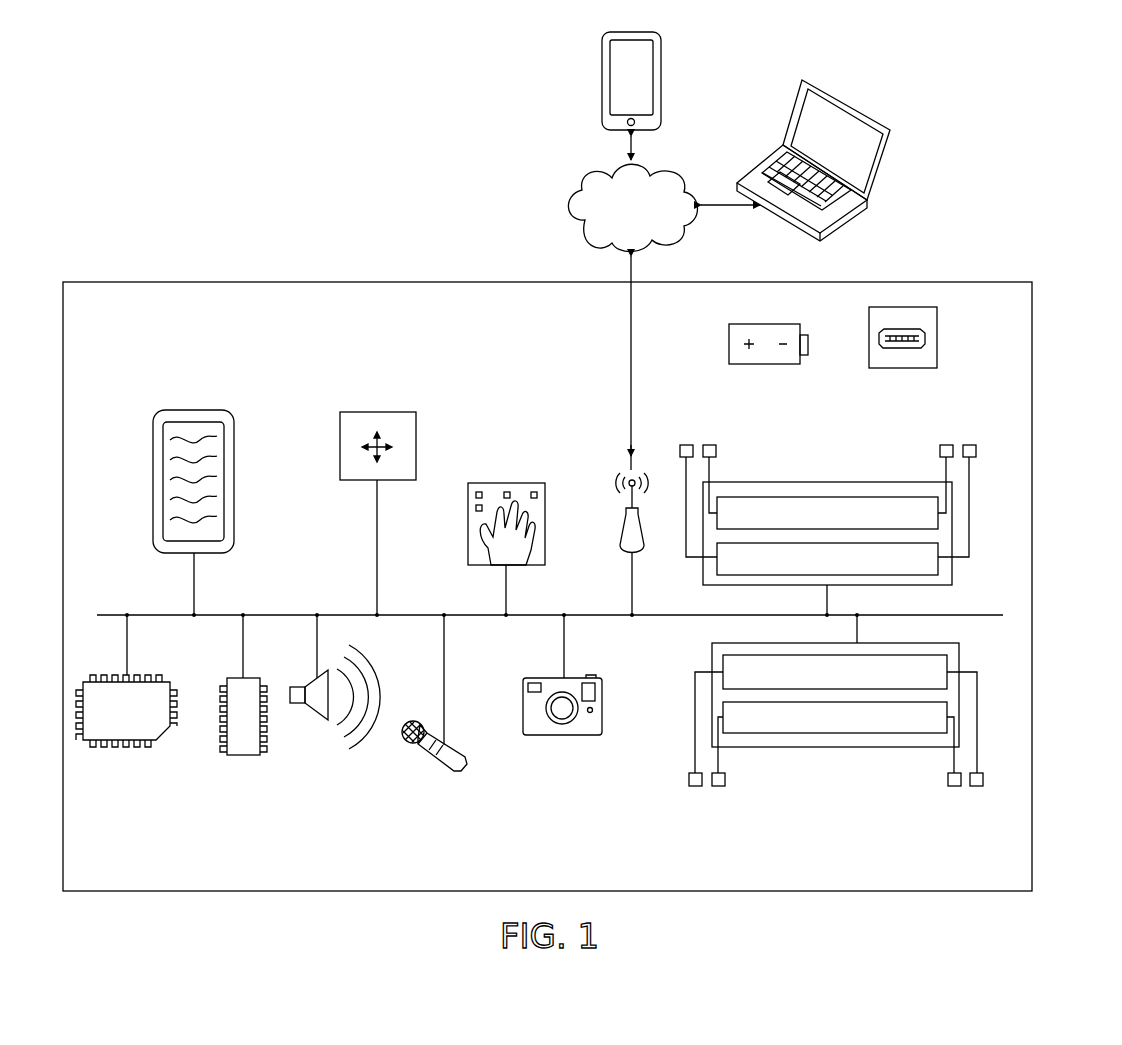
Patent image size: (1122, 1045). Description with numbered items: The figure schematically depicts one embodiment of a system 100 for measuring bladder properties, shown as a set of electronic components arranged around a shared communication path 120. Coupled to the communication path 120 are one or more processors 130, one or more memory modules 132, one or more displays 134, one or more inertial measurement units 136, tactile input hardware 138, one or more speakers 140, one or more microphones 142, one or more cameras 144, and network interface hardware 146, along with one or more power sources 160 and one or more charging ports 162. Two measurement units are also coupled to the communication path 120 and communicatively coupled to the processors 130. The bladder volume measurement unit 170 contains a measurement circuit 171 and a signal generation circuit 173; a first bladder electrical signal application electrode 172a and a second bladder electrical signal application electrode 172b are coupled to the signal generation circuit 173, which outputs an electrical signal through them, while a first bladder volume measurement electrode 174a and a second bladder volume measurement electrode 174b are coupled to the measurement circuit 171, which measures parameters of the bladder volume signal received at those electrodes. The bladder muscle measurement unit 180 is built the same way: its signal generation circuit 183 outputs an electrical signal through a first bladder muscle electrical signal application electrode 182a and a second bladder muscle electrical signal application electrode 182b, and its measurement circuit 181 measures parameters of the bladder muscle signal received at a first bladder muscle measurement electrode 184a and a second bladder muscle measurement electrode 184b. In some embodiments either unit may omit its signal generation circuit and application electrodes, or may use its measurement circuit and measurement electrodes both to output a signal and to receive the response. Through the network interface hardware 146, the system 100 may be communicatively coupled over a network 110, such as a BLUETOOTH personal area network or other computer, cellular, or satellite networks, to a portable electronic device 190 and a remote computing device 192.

The system 100 is at (1034, 281).
The network 110 is at (569, 208).
The communication path 120 is at (110, 614).
The processors 130 is at (164, 742).
The memory modules 132 is at (243, 756).
The displays 134 is at (193, 410).
The inertial measurement units 136 is at (377, 412).
The tactile input hardware 138 is at (506, 483).
The speakers 140 is at (313, 722).
The microphones 142 is at (433, 763).
The cameras 144 is at (562, 736).
The network interface hardware 146 is at (624, 518).
The power sources 160 is at (729, 341).
The charging ports 162 is at (937, 337).
The bladder volume measurement unit 170 is at (830, 499).
The measurement circuit 171 is at (853, 497).
The first bladder electrical signal application electrode 172a is at (686, 445).
The second bladder electrical signal application electrode 172b is at (969, 445).
The signal generation circuit 173 is at (945, 567).
The first bladder volume measurement electrode 174a is at (709, 445).
The second bladder volume measurement electrode 174b is at (946, 445).
The bladder muscle measurement unit 180 is at (836, 731).
The measurement circuit 181 is at (862, 733).
The first bladder muscle electrical signal application electrode 182a is at (695, 786).
The second bladder muscle electrical signal application electrode 182b is at (977, 786).
The signal generation circuit 183 is at (950, 662).
The first bladder muscle measurement electrode 184a is at (718, 786).
The second bladder muscle measurement electrode 184b is at (954, 786).
The portable electronic device 190 is at (602, 62).
The remote computing device 192 is at (885, 162).